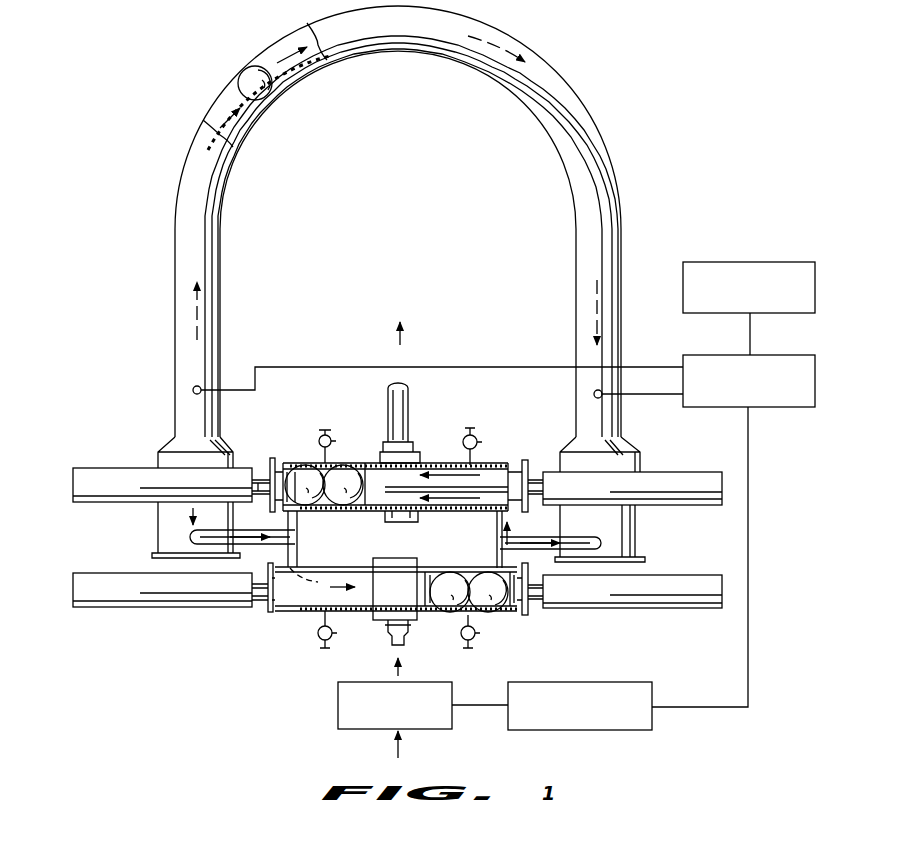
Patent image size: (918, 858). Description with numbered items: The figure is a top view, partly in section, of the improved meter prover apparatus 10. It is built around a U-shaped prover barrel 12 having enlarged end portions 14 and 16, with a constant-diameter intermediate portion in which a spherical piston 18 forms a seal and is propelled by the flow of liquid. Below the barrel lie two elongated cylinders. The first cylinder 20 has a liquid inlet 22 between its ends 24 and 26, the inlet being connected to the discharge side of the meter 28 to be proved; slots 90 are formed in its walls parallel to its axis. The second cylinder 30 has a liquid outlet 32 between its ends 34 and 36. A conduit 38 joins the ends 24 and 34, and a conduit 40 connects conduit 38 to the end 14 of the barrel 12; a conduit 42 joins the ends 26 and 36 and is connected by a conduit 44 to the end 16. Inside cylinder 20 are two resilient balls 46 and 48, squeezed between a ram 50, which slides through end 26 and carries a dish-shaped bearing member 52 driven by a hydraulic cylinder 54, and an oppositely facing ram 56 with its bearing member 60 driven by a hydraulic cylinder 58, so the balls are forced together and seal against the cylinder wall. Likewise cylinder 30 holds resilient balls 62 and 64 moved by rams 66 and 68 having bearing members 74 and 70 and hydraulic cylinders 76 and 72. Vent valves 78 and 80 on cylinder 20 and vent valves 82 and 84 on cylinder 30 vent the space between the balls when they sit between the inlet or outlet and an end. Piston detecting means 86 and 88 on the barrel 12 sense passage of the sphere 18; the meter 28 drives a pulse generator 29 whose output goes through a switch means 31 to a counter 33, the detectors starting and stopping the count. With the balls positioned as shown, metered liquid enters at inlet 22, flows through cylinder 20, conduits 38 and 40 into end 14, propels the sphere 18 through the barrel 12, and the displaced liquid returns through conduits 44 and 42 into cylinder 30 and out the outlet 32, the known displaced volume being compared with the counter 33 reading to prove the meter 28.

The meter prover apparatus 10 is at (658, 130).
The U-shaped prover barrel 12 is at (567, 110).
The enlarged end portion of barrel 14 is at (165, 513).
The enlarged end portion of barrel 16 is at (625, 527).
The piston 18 is at (250, 80).
The first elongated cylinder 20 is at (283, 616).
The liquid inlet 22 is at (385, 625).
The end of first cylinder 24 is at (268, 612).
The end of first cylinder 26 is at (528, 611).
The meter 28 is at (338, 704).
The pulse generator 29 is at (615, 684).
The second elongated cylinder 30 is at (282, 448).
The switch means 31 is at (780, 362).
The liquid outlet 32 is at (408, 462).
The counter 33 is at (762, 265).
The end of second cylinder 34 is at (266, 460).
The end of second cylinder 36 is at (533, 462).
The conduit 38 is at (298, 530).
The conduit 40 is at (190, 537).
The conduit 42 is at (497, 538).
The conduit 44 is at (550, 527).
The resilient ball 46 is at (450, 597).
The resilient ball 48 is at (487, 598).
The ram 50 is at (535, 592).
The dish-shaped bearing member 52 is at (505, 604).
The hydraulic cylinder 54 is at (697, 598).
The ram 56 is at (256, 600).
The hydraulic cylinder 58 is at (118, 602).
The dish-shaped bearing member 60 is at (432, 612).
The resilient ball 62 is at (305, 478).
The resilient ball 64 is at (343, 478).
The ram 66 is at (262, 495).
The ram 68 is at (533, 485).
The dish-shaped bearing member 70 is at (365, 462).
The hydraulic cylinder 72 is at (685, 480).
The dish-shaped bearing member 74 is at (300, 462).
The hydraulic cylinder 76 is at (95, 475).
The vent valve 78 is at (318, 638).
The vent valve 80 is at (466, 646).
The vent valve 82 is at (327, 433).
The vent valve 84 is at (478, 440).
The piston detecting means 86 is at (192, 388).
The piston detecting means 88 is at (594, 393).
The slots 90 is at (395, 502).